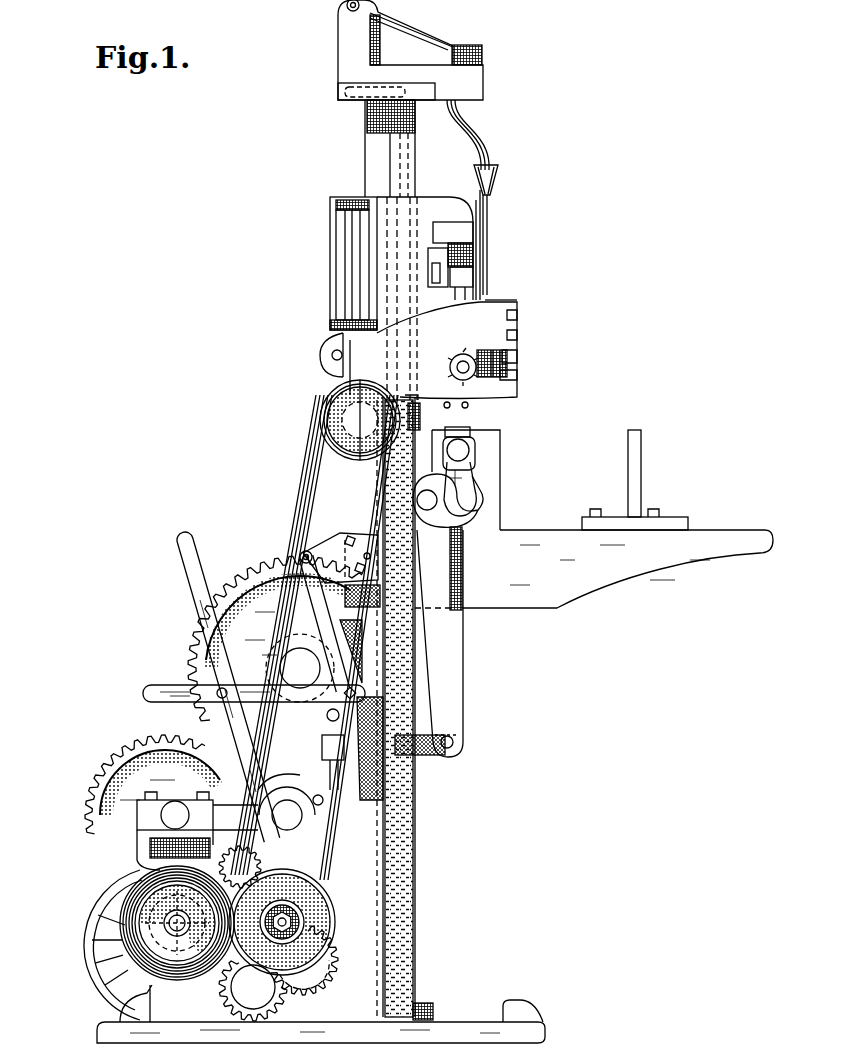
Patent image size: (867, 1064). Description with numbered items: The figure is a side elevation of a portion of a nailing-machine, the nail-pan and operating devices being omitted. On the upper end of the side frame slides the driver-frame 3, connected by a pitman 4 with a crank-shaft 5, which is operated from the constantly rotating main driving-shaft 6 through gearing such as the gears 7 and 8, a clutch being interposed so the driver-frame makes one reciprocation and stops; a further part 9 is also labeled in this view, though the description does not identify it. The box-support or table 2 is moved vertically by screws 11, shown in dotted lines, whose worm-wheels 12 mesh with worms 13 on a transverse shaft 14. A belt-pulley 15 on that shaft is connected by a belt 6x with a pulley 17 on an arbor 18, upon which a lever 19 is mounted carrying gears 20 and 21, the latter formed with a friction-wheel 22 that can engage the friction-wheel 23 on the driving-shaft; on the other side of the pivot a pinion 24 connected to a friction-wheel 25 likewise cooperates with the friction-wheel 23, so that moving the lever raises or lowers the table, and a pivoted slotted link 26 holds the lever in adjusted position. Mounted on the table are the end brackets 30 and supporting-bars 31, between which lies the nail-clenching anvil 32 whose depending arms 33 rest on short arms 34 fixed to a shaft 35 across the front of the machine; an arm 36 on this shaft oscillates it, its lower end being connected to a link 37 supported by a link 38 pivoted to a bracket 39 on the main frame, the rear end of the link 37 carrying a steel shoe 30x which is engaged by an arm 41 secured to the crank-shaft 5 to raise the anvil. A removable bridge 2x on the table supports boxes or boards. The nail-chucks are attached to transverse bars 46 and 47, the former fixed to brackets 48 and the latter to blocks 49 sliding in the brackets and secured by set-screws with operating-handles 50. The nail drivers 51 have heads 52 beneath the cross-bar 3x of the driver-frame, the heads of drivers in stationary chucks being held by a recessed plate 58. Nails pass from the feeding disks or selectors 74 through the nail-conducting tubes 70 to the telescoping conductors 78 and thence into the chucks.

The box-support or table 2 is at (617, 569).
The bridge or bracket 2x is at (641, 452).
The driver-frame 3 is at (355, 258).
The cross-bar of the driver-frame 3x is at (468, 257).
The pitman 4 is at (320, 488).
The crank-shaft 5 is at (287, 808).
The main driving-shaft 6 is at (173, 927).
The belt 6x is at (298, 517).
The gear 7 is at (171, 802).
The gear 8 is at (275, 638).
The bracket 9 is at (263, 758).
The screws 11 is at (410, 827).
The worm-wheels 12 is at (421, 413).
The worms 13 is at (330, 420).
The transverse shaft 14 is at (350, 430).
The belt-pulley 15 is at (330, 396).
The pulley 17 is at (317, 903).
The arbor 18 is at (291, 921).
The lever 19 is at (182, 541).
The gear 20 is at (338, 970).
The gear 21 is at (272, 1000).
The friction-wheel 22 is at (237, 975).
The friction-wheel 23 is at (127, 907).
The pinion 24 is at (360, 857).
The friction-wheel 25 is at (220, 865).
The pivoted slotted link 26 is at (157, 688).
The end brackets 30 is at (488, 505).
The steel shoe 30x is at (332, 791).
The supporting-bars 31 is at (477, 440).
The nail-clenching anvil or bar 32 is at (447, 427).
The depending arms 33 is at (457, 486).
The short arms 34 is at (460, 528).
The shaft 35 is at (427, 512).
The arm 36 is at (450, 654).
The link 37 is at (423, 755).
The link 38 is at (323, 620).
The bracket 39 is at (355, 535).
The arm or lever 41 is at (279, 780).
The transverse bar 46 is at (519, 330).
The transverse bar 47 is at (518, 378).
The brackets 48 is at (497, 313).
The blocks 49 is at (519, 365).
The operating-handles 50 is at (484, 332).
The nail drivers or punches 51 is at (468, 405).
The head 52 is at (473, 278).
The recessed plate 58 is at (470, 268).
The nail-conducting tubes 70 is at (467, 117).
The feeding disks or selectors 74 is at (480, 47).
The telescoping conductors 78 is at (490, 193).